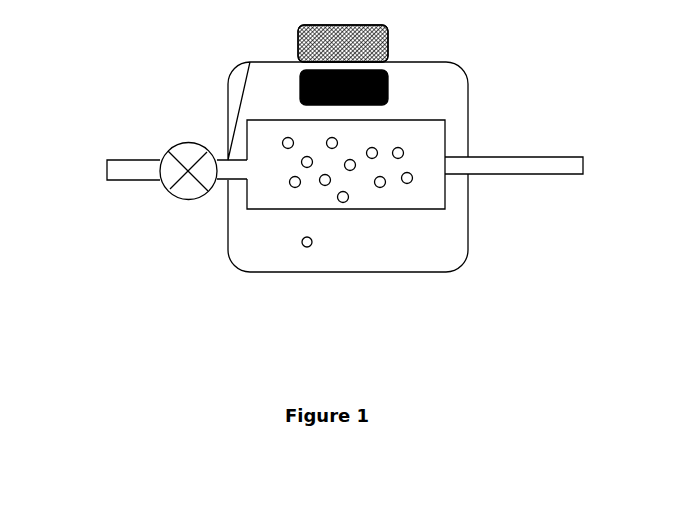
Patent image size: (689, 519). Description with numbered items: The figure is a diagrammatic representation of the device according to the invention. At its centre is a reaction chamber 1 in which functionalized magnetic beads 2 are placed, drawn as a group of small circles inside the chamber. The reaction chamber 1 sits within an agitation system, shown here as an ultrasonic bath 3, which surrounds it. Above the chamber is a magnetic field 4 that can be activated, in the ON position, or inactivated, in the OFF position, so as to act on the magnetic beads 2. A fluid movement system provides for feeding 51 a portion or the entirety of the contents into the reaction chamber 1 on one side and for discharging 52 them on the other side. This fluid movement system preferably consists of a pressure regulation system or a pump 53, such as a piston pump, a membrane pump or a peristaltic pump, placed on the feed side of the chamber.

The reaction chamber 1 is at (289, 183).
The functionalized magnetic beads 2 is at (289, 142).
The ultrasonic bath 3 is at (301, 179).
The magnetic field 4 is at (300, 90).
The feeding 51 is at (156, 151).
The discharging 52 is at (531, 204).
The pump 53 is at (139, 142).